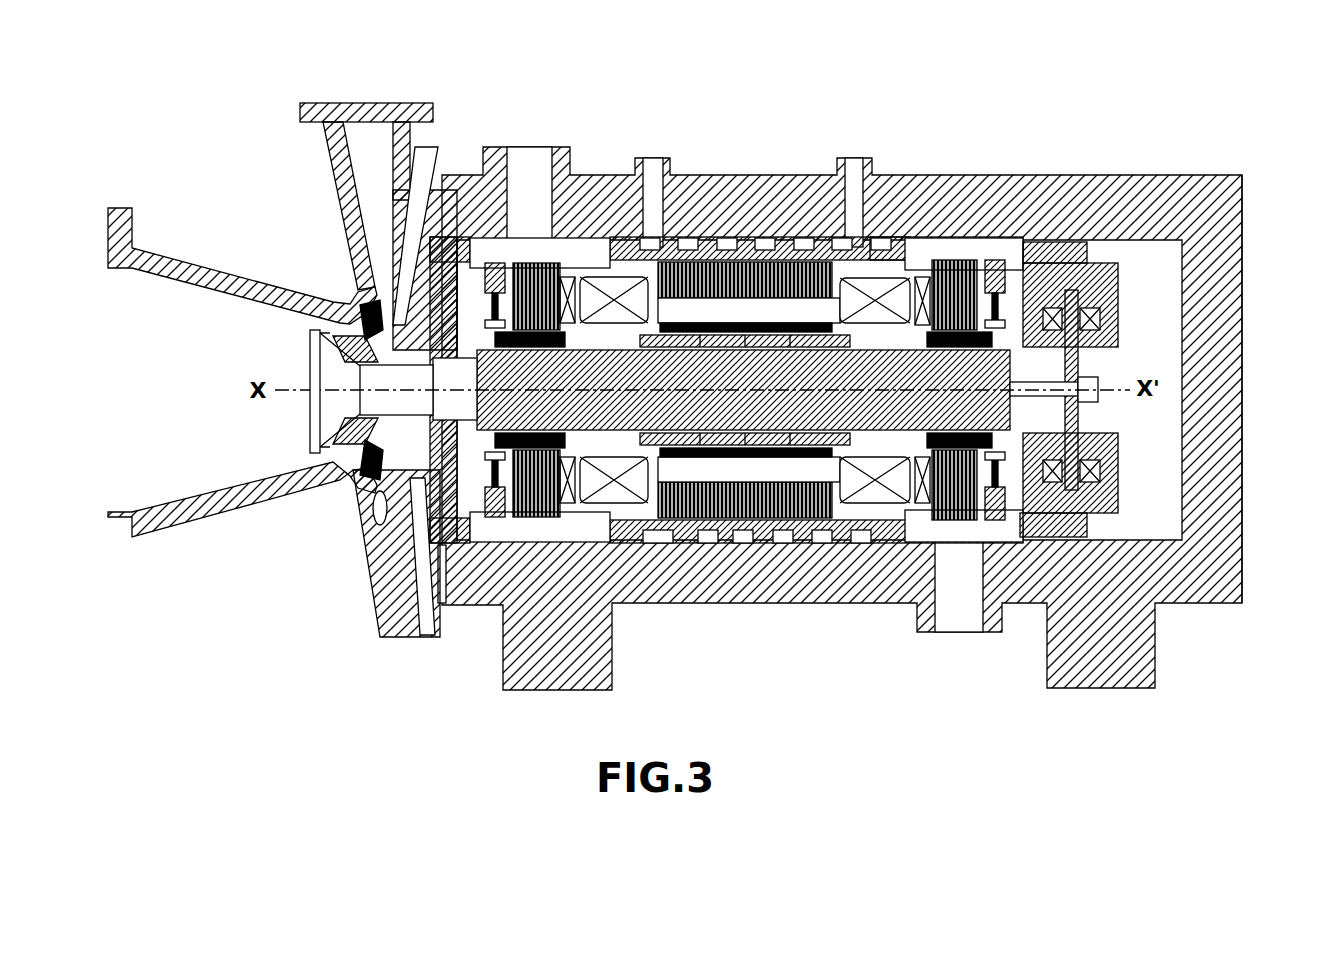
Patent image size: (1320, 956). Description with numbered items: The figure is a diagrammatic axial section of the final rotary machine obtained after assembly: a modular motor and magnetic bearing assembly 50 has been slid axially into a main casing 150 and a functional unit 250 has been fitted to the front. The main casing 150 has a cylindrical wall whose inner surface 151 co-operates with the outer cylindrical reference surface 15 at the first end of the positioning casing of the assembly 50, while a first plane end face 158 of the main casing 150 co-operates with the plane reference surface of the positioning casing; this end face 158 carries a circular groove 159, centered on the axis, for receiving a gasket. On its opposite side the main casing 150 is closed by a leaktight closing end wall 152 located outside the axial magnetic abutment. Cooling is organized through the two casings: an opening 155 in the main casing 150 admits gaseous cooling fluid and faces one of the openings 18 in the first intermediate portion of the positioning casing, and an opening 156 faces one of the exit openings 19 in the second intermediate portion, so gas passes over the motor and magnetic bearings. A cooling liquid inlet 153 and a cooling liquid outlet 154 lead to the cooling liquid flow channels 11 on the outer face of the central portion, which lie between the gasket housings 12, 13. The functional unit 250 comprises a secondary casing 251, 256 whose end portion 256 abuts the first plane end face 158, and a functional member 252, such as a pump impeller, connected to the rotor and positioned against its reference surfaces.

The main casing 150 is at (1082, 171).
The inner surface 151 is at (1128, 240).
The leaktight closing end wall 152 is at (1235, 270).
The cooling liquid inlet 153 is at (655, 160).
The cooling liquid outlet 154 is at (858, 160).
The opening for entry of gaseous cooling fluid 155 is at (545, 152).
The opening for exit of gaseous cooling fluid 156 is at (938, 612).
The first plane end face 158 is at (458, 176).
The circular groove 159 is at (444, 580).
The outer cylindrical reference surface 15 is at (452, 545).
The gasket housing 12 is at (630, 240).
The gasket housing 13 is at (878, 238).
The cooling liquid flow channels 11 is at (775, 545).
The openings for entry of gaseous cooling fluid 18 is at (578, 262).
The openings for exit of gaseous cooling fluid 19 is at (1020, 258).
The modular motor and magnetic bearing assembly 50 is at (1116, 417).
The functional unit 250 is at (222, 540).
The secondary casing 251 is at (176, 265).
The functional member 252 is at (308, 364).
The end portion of the secondary casing 256 is at (440, 168).